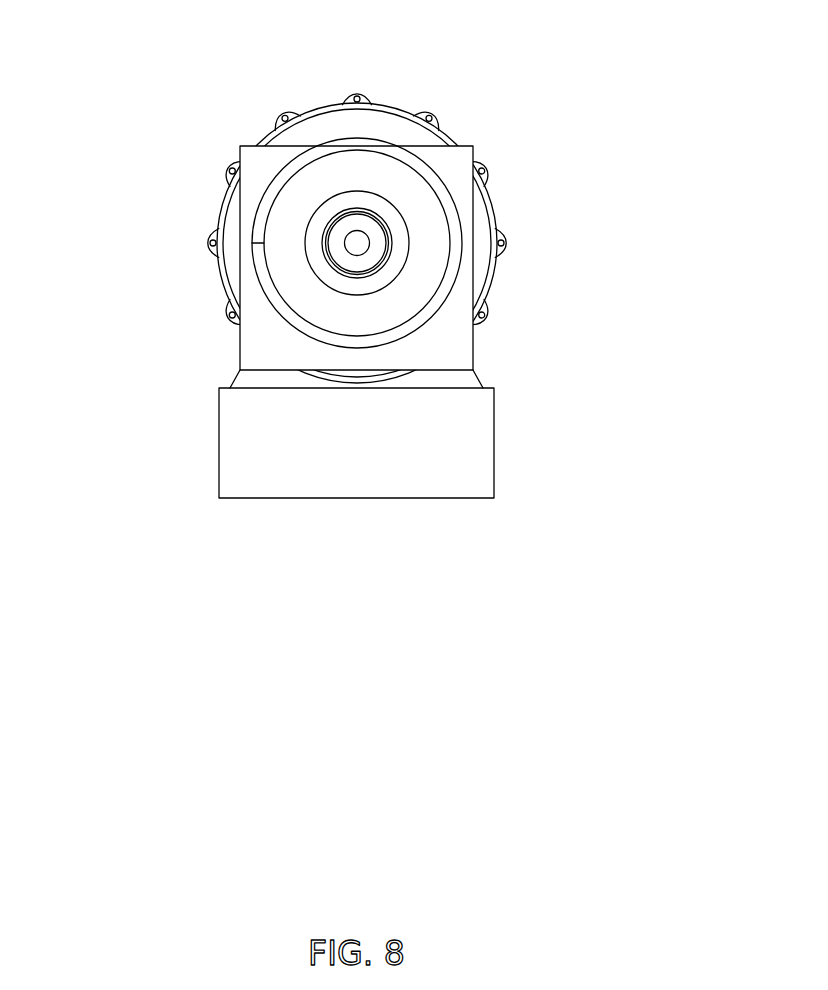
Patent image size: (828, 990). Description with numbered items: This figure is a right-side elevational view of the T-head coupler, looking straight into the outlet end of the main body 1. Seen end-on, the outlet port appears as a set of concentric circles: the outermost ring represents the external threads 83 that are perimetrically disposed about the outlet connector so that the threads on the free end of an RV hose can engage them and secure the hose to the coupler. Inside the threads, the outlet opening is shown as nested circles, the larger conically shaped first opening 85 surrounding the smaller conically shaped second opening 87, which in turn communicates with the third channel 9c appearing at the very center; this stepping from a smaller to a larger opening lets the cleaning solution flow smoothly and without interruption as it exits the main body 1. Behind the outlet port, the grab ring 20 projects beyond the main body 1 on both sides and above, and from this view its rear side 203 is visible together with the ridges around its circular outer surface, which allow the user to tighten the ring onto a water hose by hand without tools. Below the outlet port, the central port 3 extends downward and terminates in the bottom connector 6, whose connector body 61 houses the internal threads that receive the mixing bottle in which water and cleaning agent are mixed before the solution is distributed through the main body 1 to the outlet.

The main body 1 is at (367, 314).
The central port 3 is at (257, 335).
The bottom connector 6 is at (289, 484).
The connector body 61 is at (428, 468).
The grab ring 20 is at (352, 195).
The rear side 203 is at (395, 75).
The external threads 83 is at (418, 163).
The first opening 85 is at (420, 293).
The second opening 87 is at (332, 248).
The third channel 9c is at (363, 242).